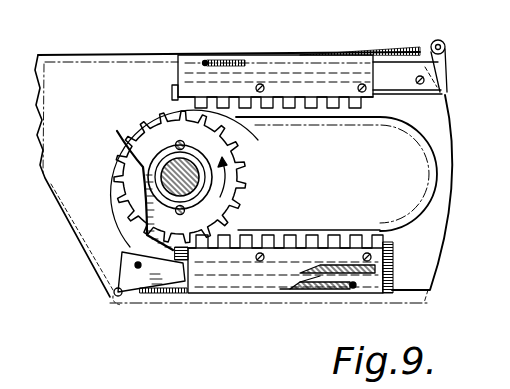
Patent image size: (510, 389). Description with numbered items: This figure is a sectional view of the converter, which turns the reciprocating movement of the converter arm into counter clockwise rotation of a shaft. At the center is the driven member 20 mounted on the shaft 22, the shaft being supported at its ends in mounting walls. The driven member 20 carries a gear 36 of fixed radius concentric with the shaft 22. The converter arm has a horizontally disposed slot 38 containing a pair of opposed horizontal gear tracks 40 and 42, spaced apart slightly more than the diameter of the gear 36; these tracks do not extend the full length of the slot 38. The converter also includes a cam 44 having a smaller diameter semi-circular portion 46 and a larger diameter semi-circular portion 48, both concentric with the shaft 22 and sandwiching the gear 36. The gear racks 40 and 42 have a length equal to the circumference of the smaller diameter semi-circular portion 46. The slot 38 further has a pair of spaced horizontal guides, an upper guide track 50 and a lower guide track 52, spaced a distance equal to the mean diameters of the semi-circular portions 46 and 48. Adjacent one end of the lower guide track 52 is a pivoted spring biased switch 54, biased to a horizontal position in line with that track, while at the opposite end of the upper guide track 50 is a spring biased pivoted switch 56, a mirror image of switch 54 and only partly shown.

The driven member 20 is at (258, 181).
The shaft 22 is at (176, 177).
The gear 36 is at (256, 197).
The slot 38 is at (420, 214).
The gear track 40 is at (352, 108).
The gear track 42 is at (338, 238).
The cam 44 is at (261, 165).
The smaller diameter semi-circular portion 46 is at (270, 117).
The larger diameter semi-circular portion 48 is at (145, 118).
The upper guide track 50 is at (316, 90).
The lower guide track 52 is at (315, 256).
The pivoted spring biased switch 54 is at (125, 278).
The spring biased pivoted switch 56 is at (442, 64).